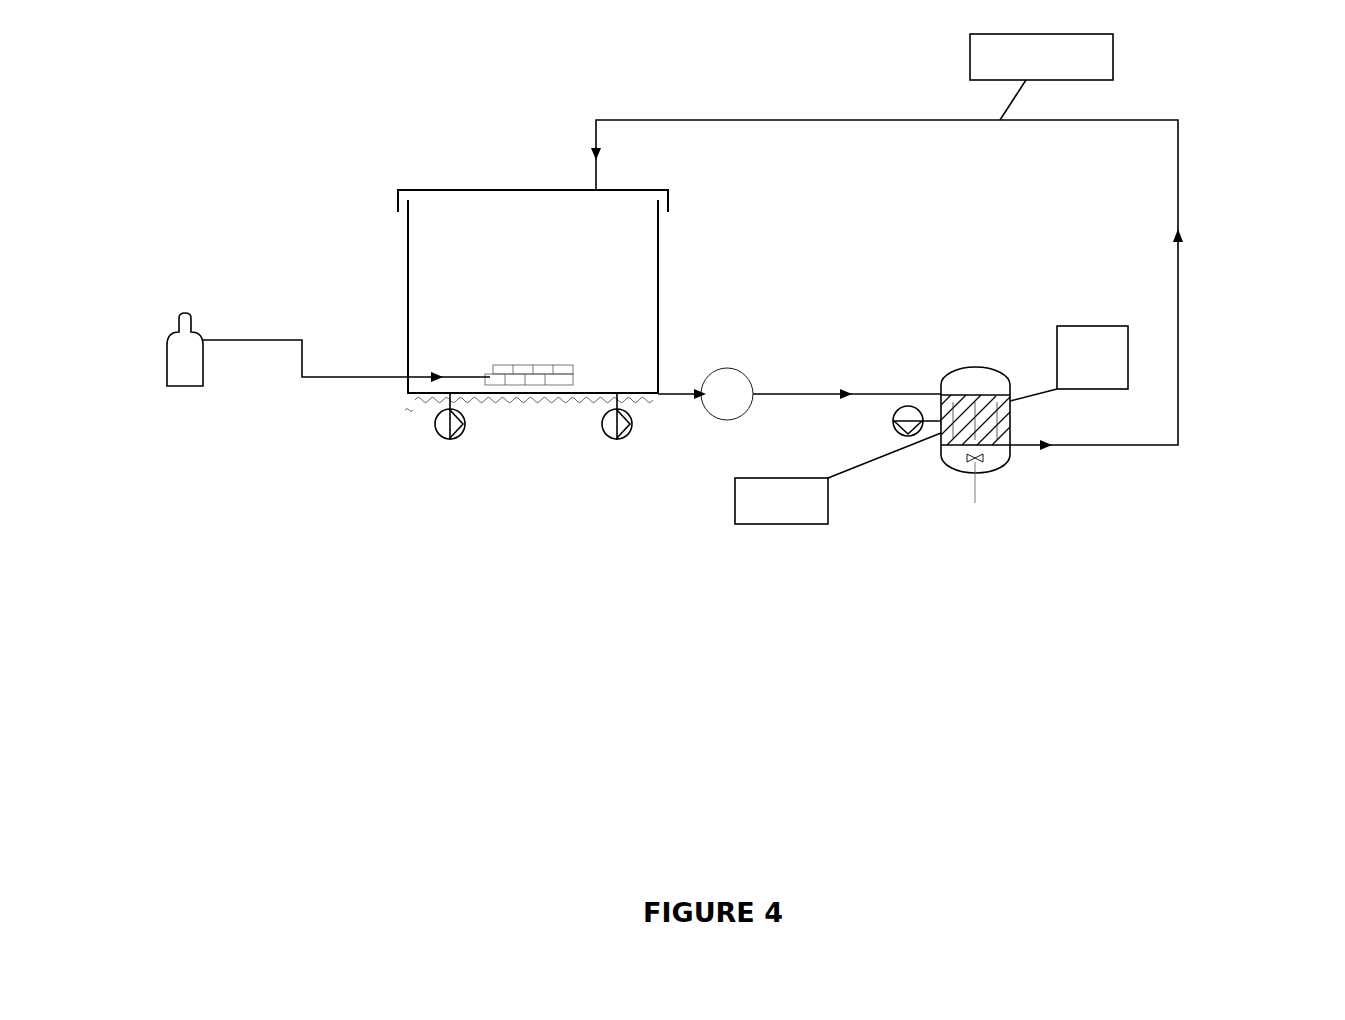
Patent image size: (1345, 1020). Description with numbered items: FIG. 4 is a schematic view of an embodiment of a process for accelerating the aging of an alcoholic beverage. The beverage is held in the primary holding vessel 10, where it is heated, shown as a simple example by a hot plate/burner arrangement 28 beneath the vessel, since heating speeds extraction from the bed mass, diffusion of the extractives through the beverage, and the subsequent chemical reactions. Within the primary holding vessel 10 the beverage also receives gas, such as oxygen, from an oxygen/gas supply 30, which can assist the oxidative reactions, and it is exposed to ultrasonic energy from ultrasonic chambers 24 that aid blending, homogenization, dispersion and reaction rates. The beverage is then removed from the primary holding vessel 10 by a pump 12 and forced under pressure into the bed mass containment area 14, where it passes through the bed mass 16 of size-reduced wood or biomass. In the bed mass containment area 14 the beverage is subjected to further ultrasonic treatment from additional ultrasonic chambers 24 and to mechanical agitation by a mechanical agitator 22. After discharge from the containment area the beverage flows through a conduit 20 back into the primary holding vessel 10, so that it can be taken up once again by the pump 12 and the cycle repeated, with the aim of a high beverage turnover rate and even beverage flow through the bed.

The primary holding vessel 10 is at (462, 190).
The pump 12 is at (717, 418).
The bed mass containment area 14 is at (940, 386).
The biomass bed 16 is at (1010, 421).
The conduit 20 is at (788, 120).
The mechanical agitator 22 is at (980, 458).
The ultrasonic chambers/transducers 24 is at (435, 425).
The hot plate/burner 28 is at (525, 406).
The oxygen/gas supply 30 is at (165, 343).